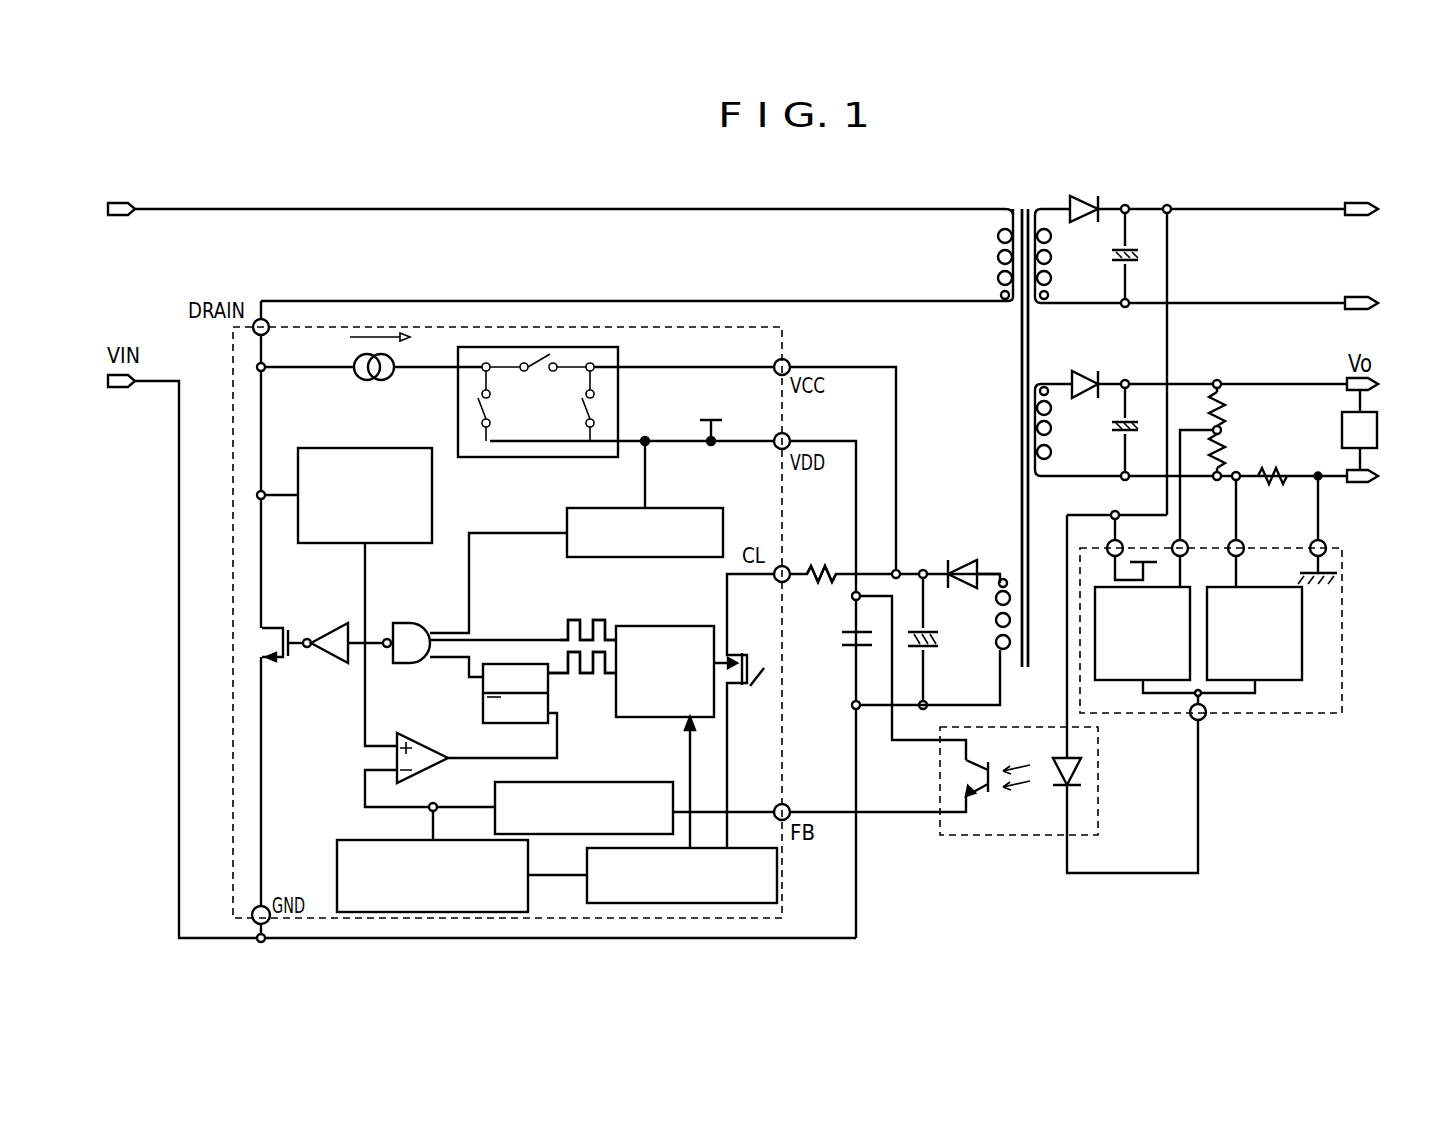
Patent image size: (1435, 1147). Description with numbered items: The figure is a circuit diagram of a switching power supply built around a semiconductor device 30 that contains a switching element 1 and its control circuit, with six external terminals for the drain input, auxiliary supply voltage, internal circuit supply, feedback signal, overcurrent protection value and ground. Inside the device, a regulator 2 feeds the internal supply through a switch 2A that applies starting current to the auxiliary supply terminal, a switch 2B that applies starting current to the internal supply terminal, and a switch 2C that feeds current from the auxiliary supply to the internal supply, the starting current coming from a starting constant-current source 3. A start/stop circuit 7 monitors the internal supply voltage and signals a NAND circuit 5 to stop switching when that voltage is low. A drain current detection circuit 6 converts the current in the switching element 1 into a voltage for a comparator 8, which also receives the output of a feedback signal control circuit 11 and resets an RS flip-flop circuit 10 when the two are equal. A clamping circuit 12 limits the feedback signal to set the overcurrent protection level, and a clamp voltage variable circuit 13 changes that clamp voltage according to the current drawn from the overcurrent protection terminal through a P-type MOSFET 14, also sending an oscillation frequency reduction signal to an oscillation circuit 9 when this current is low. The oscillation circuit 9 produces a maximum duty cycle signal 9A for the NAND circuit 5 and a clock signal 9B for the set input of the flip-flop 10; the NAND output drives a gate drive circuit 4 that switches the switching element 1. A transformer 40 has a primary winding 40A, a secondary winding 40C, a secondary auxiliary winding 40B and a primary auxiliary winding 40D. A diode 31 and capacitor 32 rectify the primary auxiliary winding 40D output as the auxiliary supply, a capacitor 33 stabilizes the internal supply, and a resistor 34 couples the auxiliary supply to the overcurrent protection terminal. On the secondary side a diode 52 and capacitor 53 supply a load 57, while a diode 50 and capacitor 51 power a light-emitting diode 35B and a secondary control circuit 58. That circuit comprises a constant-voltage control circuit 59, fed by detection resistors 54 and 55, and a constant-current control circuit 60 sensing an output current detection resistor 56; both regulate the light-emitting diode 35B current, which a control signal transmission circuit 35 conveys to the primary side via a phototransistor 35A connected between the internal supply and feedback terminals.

The switching element 1 is at (278, 640).
The regulator 2 is at (598, 345).
The switch 2A is at (538, 357).
The switch 2B is at (480, 402).
The switch 2C is at (597, 408).
The starting constant-current source 3 is at (354, 378).
The gate drive circuit 4 is at (330, 655).
The NAND circuit 5 is at (420, 620).
The drain current detection circuit 6 is at (326, 543).
The start/stop circuit 7 is at (725, 522).
The comparator 8 is at (437, 770).
The oscillation circuit 9 is at (636, 625).
The maximum duty cycle signal 9A is at (560, 618).
The clock signal 9B is at (560, 652).
The RS flip-flop circuit 10 is at (483, 693).
The feedback signal control circuit 11 is at (585, 760).
The clamping circuit 12 is at (337, 873).
The clamp voltage variable circuit 13 is at (780, 889).
The P-type MOSFET 14 is at (730, 686).
The semiconductor device 30 is at (415, 327).
The diode 31 is at (962, 566).
The capacitor 32 is at (925, 650).
The capacitor 33 is at (850, 655).
The resistor 34 is at (822, 565).
The control signal transmission circuit 35 is at (965, 840).
The phototransistor 35A is at (968, 767).
The light-emitting diode 35B is at (1082, 775).
The transformer 40 is at (1027, 205).
The primary winding 40A is at (997, 237).
The secondary auxiliary winding 40B is at (1052, 258).
The secondary winding 40C is at (1052, 437).
The primary auxiliary winding 40D is at (1008, 650).
The diode 50 is at (1086, 200).
The capacitor 51 is at (1140, 255).
The diode 52 is at (1082, 368).
The capacitor 53 is at (1130, 415).
The detection resistor 54 is at (1222, 396).
The detection resistor 55 is at (1222, 452).
The output current detection resistor 56 is at (1276, 480).
The load 57 is at (1378, 432).
The secondary control circuit 58 is at (1243, 713).
The constant-voltage control circuit 59 is at (1125, 682).
The constant-current control circuit 60 is at (1305, 632).